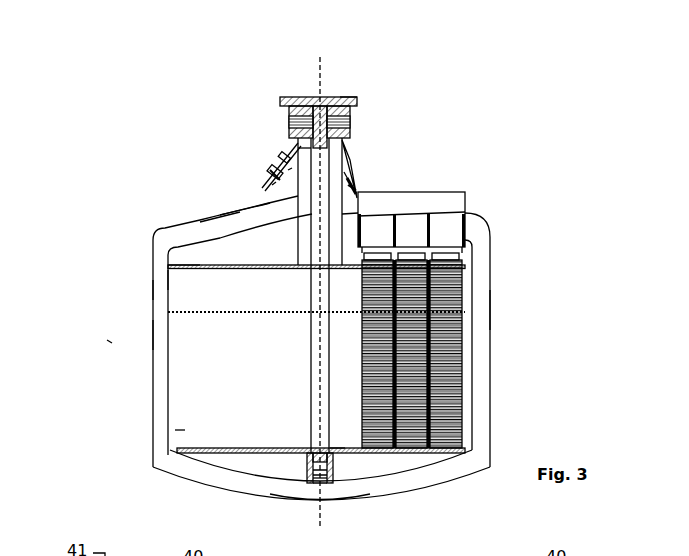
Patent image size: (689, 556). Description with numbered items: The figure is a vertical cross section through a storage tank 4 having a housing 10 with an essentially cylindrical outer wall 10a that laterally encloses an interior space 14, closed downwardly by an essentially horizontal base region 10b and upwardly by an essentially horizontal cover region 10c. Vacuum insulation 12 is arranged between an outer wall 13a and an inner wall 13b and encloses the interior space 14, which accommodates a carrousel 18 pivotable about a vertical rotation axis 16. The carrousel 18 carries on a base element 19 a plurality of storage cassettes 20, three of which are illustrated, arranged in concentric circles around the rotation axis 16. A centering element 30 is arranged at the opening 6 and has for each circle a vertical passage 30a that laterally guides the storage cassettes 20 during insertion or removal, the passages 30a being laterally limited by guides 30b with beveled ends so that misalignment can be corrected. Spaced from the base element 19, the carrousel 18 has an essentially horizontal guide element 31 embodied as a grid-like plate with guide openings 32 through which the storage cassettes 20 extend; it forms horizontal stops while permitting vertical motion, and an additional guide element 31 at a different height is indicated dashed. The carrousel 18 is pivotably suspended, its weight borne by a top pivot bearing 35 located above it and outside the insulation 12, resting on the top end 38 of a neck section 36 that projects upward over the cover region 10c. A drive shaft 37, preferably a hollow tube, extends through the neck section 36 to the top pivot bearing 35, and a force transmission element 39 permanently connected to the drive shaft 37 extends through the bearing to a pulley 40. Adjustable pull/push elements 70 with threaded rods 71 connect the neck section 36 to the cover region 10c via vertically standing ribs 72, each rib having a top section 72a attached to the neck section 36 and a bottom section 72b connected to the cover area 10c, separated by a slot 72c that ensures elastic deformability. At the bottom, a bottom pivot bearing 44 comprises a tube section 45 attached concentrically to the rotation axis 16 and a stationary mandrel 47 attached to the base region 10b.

The storage tank 4 is at (107, 343).
The opening 6 is at (443, 190).
The housing 10 is at (490, 227).
The outer wall 10a is at (495, 310).
The base region 10b is at (288, 507).
The cover region 10c is at (238, 197).
The vacuum insulation 12 is at (162, 333).
The outer wall 13a is at (153, 288).
The inner wall 13b is at (170, 280).
The interior space 14 is at (230, 250).
The rotation axis 16 is at (324, 74).
The carrousel 18 is at (182, 435).
The base element 19 is at (210, 452).
The storage cassettes 20 is at (370, 442).
The centering element 30 is at (440, 213).
The vertical passage 30a is at (380, 220).
The guides 30b is at (432, 243).
The guide element 31 is at (168, 268).
The guide openings 32 is at (190, 267).
The top pivot bearing 35 is at (368, 115).
The neck section 36 is at (287, 150).
The drive shaft 37 is at (350, 177).
The top end 38 is at (300, 128).
The force transmission element 39 is at (313, 96).
The pulley 40 is at (338, 97).
The bottom pivot bearing 44 is at (293, 472).
The tube section 45 is at (337, 450).
The mandrel 47 is at (323, 473).
The pull/push elements 70 is at (267, 167).
The threaded rods 71 is at (268, 180).
The ribs 72 is at (300, 153).
The top section 72a is at (290, 156).
The bottom section 72b is at (272, 195).
The slot 72c is at (288, 178).